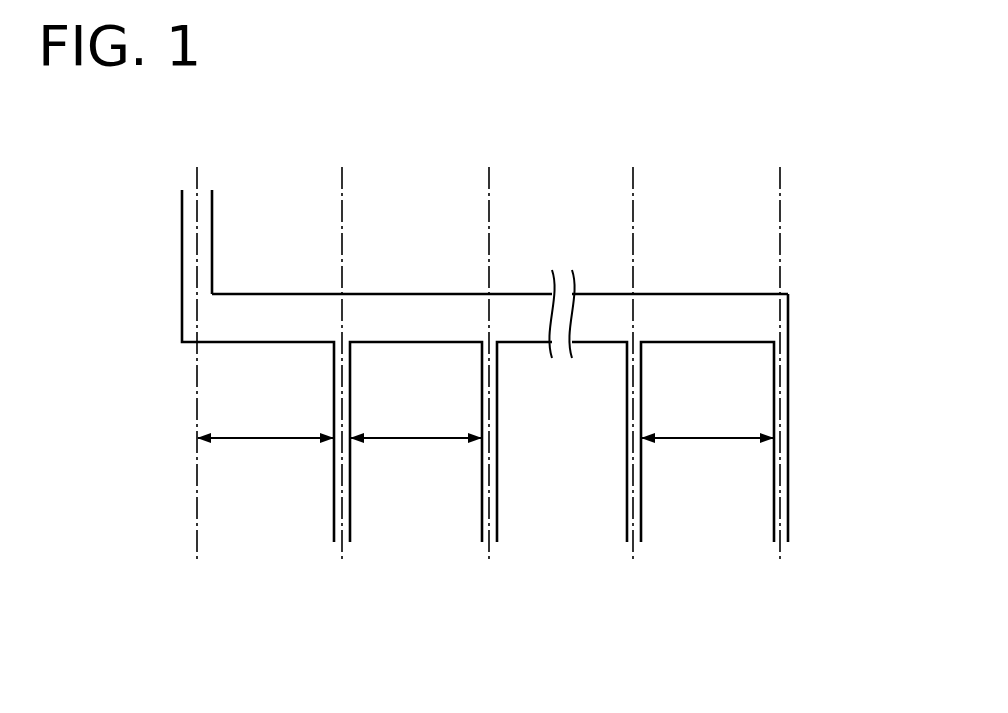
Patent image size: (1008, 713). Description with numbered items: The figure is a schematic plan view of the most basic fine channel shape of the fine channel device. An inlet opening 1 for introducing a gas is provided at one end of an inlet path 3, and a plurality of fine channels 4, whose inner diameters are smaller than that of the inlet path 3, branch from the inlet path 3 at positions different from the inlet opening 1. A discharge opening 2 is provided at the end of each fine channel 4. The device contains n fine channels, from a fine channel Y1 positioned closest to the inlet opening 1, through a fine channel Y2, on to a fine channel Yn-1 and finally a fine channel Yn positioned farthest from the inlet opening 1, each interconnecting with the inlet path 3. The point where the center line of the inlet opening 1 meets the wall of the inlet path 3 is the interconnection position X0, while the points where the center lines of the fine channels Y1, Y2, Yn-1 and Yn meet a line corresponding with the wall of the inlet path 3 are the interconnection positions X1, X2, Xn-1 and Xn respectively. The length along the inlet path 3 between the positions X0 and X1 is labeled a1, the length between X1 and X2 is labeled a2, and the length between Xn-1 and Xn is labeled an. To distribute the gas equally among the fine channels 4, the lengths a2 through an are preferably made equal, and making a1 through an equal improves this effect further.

The inlet opening 1 is at (222, 185).
The discharge opening 2 is at (483, 548).
The inlet path 3 is at (455, 291).
The fine channel 4 is at (792, 380).
The interconnection position of inlet opening X0 is at (188, 349).
The interconnection position of fine channel Y1 X1 is at (335, 345).
The interconnection position of fine channel Y2 X2 is at (483, 345).
The interconnection position of fine channel Yn-1 Xn-1 is at (628, 345).
The interconnection position of fine channel Yn Xn is at (775, 345).
The fine channel Y1 is at (333, 493).
The fine channel Y2 is at (500, 493).
The fine channel Yn-1 is at (643, 493).
The fine channel Yn is at (791, 493).
The length a1 is at (265, 459).
The length a2 is at (416, 459).
The length an is at (707, 459).